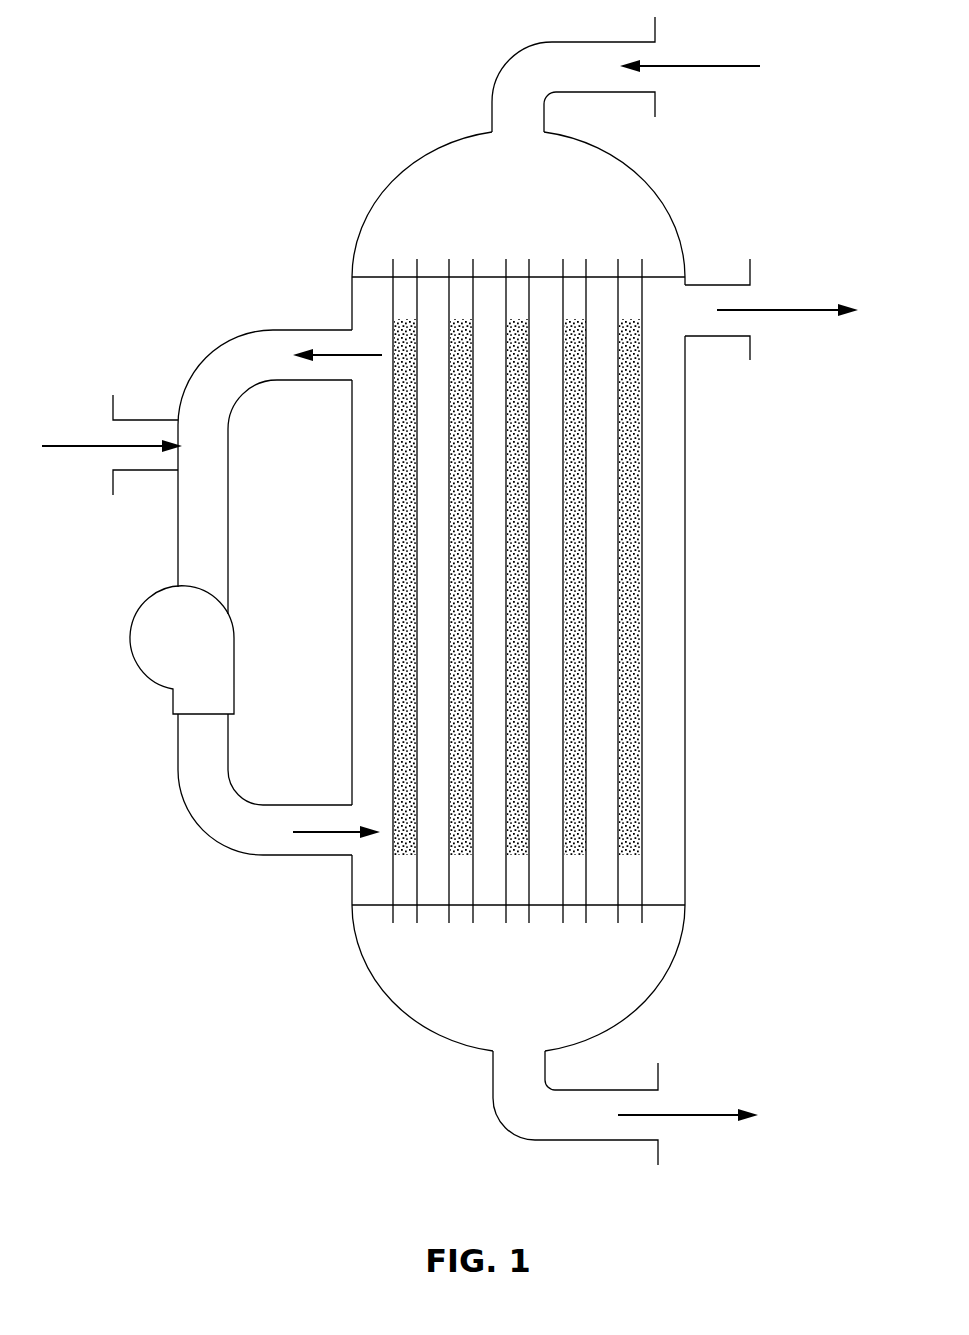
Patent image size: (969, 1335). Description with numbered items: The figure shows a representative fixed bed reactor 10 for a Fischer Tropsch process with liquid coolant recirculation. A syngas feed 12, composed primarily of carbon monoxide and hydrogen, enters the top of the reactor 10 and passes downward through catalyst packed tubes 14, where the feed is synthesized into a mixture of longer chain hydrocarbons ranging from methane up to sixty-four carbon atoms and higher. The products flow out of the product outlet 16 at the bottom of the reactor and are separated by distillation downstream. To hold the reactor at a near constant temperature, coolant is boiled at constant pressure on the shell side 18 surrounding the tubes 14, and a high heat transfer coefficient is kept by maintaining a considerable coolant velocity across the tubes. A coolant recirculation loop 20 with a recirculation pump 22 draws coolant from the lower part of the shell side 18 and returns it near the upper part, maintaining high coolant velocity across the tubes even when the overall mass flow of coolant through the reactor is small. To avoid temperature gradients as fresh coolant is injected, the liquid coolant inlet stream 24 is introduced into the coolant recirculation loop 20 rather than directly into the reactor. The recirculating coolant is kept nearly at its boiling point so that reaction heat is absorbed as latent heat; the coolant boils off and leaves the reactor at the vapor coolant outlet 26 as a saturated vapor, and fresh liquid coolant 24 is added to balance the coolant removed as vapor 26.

The fixed bed reactor 10 is at (412, 162).
The syngas feed 12 is at (688, 66).
The catalyst packed tubes 14 is at (628, 729).
The product outlet 16 is at (695, 1117).
The shell side 18 is at (672, 527).
The coolant recirculation loop 20 is at (278, 348).
The recirculation pump 22 is at (143, 637).
The liquid coolant inlet stream 24 is at (105, 448).
The vapor coolant outlet 26 is at (805, 312).